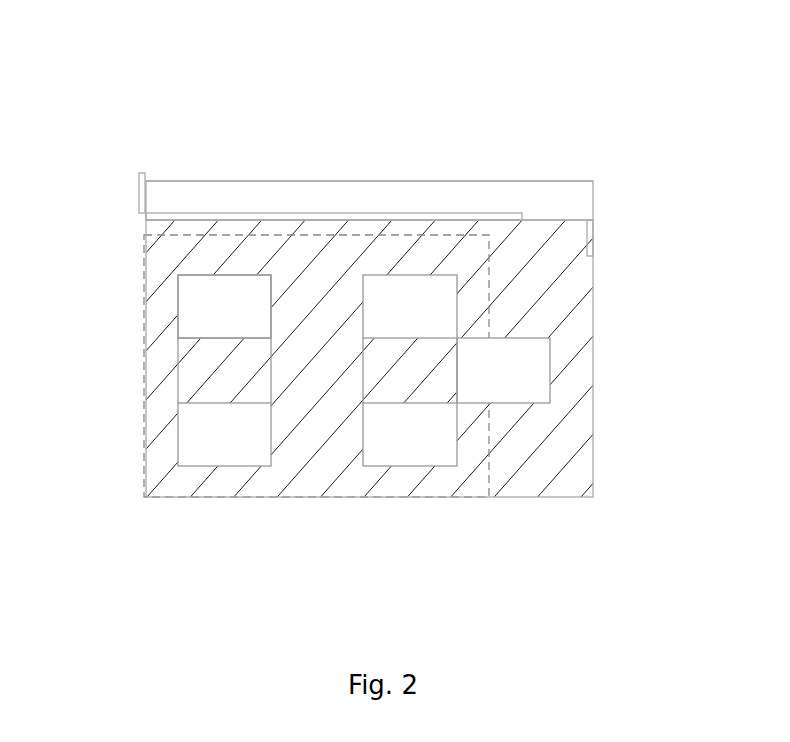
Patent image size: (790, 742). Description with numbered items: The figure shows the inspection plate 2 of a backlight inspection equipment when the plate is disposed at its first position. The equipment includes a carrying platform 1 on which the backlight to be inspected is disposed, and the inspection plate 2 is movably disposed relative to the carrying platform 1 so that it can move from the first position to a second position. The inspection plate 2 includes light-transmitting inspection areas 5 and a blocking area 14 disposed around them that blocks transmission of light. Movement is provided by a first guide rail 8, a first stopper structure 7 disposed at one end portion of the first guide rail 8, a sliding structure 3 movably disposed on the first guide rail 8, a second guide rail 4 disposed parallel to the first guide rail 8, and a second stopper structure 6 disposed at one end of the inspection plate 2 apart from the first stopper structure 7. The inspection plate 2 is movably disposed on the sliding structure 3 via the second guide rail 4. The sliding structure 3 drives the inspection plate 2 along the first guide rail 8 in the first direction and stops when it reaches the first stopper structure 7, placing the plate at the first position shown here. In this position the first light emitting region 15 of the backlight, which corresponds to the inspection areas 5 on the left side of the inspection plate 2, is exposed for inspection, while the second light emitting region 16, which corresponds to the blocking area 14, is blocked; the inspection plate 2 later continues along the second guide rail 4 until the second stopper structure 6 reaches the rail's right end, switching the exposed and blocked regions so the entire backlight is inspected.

The carrying platform 1 is at (158, 427).
The inspection plate 2 is at (595, 409).
The sliding structure 3 is at (412, 190).
The second guide rail 4 is at (265, 213).
The inspection area 5 is at (240, 303).
The second stopper structure 6 is at (592, 230).
The first stopper structure 7 is at (141, 172).
The first guide rail 8 is at (317, 190).
The blocking area 14 is at (558, 300).
The first light emitting region 15 is at (217, 303).
The second light emitting region 16 is at (207, 357).